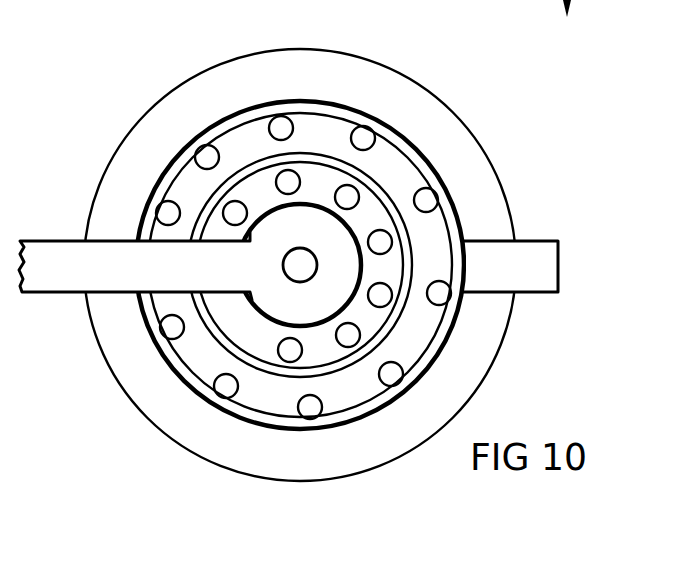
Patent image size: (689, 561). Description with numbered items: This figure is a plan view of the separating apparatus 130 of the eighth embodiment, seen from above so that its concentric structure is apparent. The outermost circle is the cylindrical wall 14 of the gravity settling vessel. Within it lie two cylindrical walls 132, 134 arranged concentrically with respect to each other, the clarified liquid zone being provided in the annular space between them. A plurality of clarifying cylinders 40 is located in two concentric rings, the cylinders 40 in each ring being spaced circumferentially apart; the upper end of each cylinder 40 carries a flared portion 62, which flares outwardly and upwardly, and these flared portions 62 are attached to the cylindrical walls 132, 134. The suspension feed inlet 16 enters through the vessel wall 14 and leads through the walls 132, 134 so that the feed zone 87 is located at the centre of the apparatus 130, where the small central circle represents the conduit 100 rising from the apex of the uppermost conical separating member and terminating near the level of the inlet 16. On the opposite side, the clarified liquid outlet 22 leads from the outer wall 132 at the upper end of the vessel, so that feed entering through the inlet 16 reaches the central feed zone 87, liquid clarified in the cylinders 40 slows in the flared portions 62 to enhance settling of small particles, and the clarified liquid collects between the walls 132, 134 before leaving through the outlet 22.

The cylindrical wall 14 is at (497, 358).
The suspension feed inlet 16 is at (101, 258).
The clarified liquid outlet 22 is at (542, 271).
The clarifying cylinder 40 is at (288, 182).
The flared portion 62 is at (191, 140).
The feed zone 87 is at (272, 299).
The conduit 100 is at (283, 268).
The separating apparatus 130 is at (520, 154).
The cylindrical wall 132 is at (465, 210).
The cylindrical wall 134 is at (341, 224).